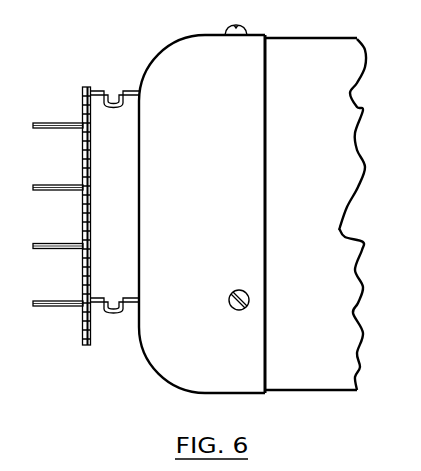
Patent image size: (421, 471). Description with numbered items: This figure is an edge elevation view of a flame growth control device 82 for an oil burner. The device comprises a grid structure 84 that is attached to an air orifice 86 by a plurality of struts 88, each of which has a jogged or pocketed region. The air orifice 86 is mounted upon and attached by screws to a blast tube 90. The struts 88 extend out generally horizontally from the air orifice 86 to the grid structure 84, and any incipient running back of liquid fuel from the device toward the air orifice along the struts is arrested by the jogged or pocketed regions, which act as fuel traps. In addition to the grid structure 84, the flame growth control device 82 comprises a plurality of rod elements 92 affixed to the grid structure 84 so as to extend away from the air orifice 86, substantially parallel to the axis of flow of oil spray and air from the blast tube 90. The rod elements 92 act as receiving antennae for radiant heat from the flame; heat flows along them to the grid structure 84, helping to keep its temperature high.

The flame growth control device 82 is at (49, 212).
The grid structure 84 is at (52, 216).
The air orifice 86 is at (202, 196).
The struts 88 is at (114, 180).
The blast tube 90 is at (316, 195).
The rod elements 92 is at (45, 214).